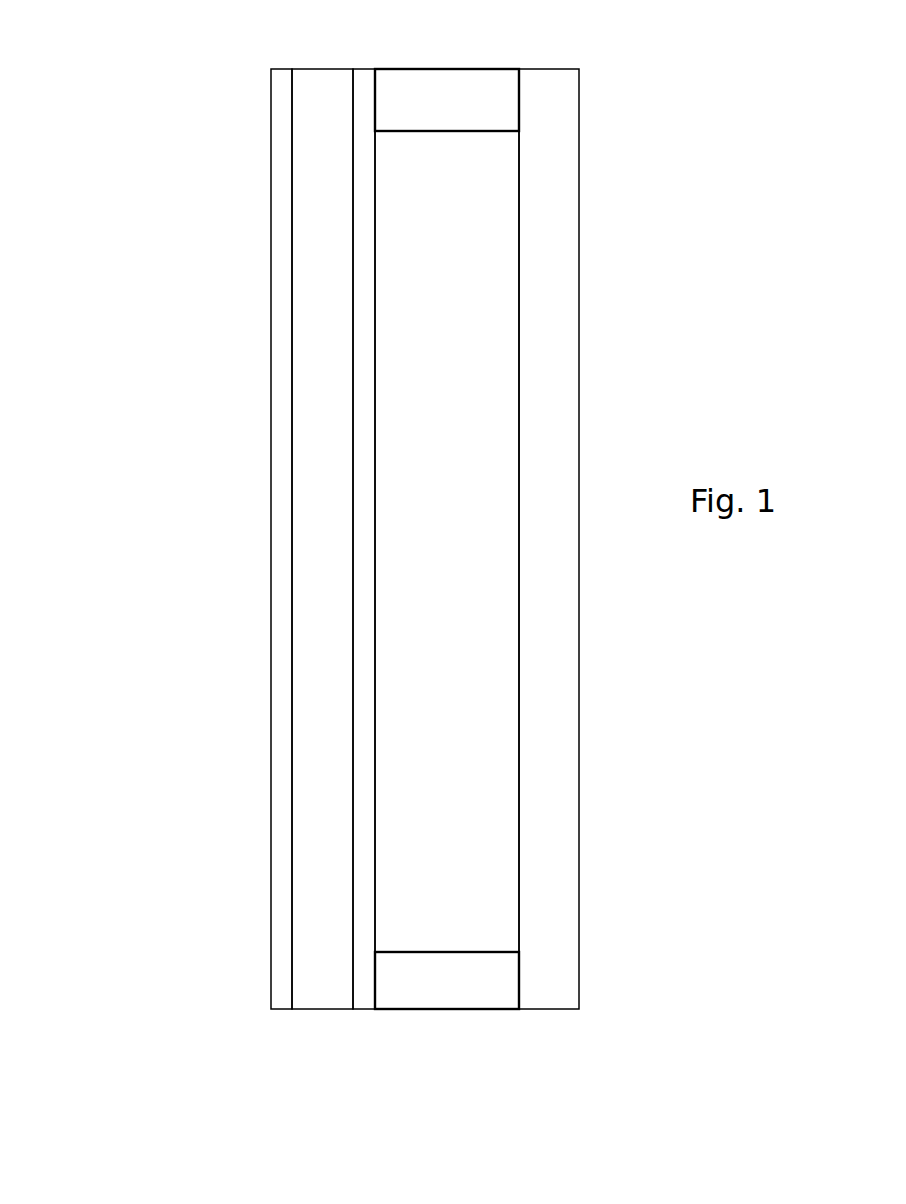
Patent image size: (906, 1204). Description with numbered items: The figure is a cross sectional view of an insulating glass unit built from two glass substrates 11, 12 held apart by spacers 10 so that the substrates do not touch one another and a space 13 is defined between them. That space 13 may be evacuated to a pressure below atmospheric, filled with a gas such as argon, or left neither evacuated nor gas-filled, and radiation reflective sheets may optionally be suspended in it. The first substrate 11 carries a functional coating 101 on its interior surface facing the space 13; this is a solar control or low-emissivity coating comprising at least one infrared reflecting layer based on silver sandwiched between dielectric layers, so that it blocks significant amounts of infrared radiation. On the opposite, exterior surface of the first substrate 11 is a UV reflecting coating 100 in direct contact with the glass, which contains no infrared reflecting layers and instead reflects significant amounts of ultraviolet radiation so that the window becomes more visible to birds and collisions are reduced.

The spacer 10 is at (534, 538).
The first glass substrate 11 is at (266, 539).
The second glass substrate 12 is at (612, 539).
The space 13 is at (530, 541).
The UV reflecting coating 100 is at (181, 539).
The functional coating 101 is at (214, 539).